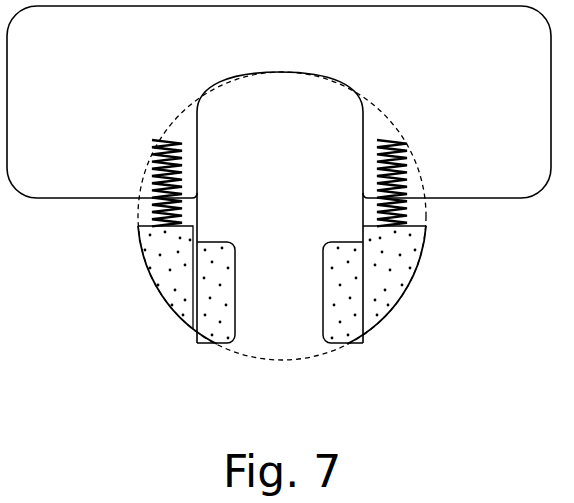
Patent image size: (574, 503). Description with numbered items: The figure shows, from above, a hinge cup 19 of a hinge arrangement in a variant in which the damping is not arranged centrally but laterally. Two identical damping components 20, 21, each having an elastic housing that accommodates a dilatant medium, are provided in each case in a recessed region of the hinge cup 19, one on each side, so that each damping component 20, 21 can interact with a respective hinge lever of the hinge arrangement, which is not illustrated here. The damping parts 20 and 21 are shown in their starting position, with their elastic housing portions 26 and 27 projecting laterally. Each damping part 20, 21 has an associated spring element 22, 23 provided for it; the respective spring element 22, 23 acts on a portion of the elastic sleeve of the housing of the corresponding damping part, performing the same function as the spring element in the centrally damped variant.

The hinge cup 19 is at (441, 254).
The damping component 20 is at (213, 224).
The damping component 21 is at (343, 222).
The spring element 22 is at (153, 170).
The spring element 23 is at (402, 152).
The elastic housing portion 26 is at (241, 312).
The elastic housing portion 27 is at (316, 251).